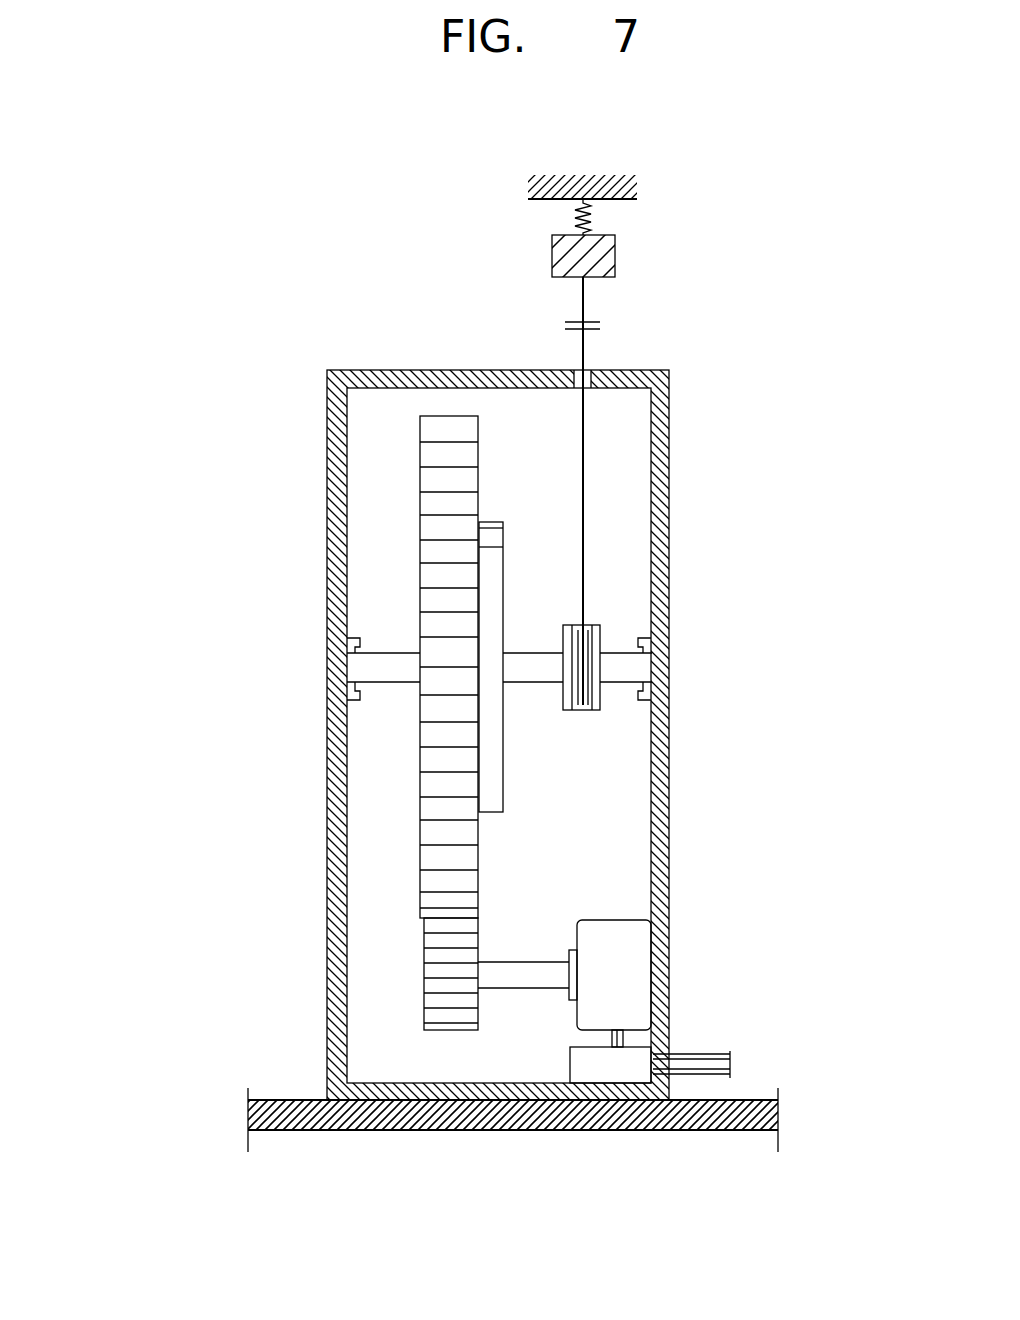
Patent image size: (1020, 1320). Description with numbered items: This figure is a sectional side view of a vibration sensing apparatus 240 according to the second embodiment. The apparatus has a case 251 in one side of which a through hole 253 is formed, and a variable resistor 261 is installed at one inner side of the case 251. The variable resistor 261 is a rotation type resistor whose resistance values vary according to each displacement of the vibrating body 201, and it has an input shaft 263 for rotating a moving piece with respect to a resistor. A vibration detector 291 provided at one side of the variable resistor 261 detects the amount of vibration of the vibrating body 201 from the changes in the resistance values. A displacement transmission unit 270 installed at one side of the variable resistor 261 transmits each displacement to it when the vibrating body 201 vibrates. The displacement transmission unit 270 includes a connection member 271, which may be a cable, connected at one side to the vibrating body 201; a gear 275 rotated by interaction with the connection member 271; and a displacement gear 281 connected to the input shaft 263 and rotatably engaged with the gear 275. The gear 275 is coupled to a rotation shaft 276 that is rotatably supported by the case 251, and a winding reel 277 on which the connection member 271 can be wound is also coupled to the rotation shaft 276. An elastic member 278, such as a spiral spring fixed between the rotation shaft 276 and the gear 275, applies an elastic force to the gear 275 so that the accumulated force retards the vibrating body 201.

The vibrating body 201 is at (615, 250).
The vibration sensing apparatus 240 is at (236, 265).
The case 251 is at (669, 418).
The through hole 253 is at (587, 370).
The variable resistor 261 is at (624, 921).
The input shaft 263 is at (512, 977).
The displacement transmission unit 270 is at (115, 508).
The connection member 271 is at (583, 297).
The gear 275 is at (437, 602).
The rotation shaft 276 is at (614, 683).
The winding reel 277 is at (601, 634).
The elastic member 278 is at (497, 782).
The displacement gear 281 is at (437, 942).
The vibration detector 291 is at (607, 1073).